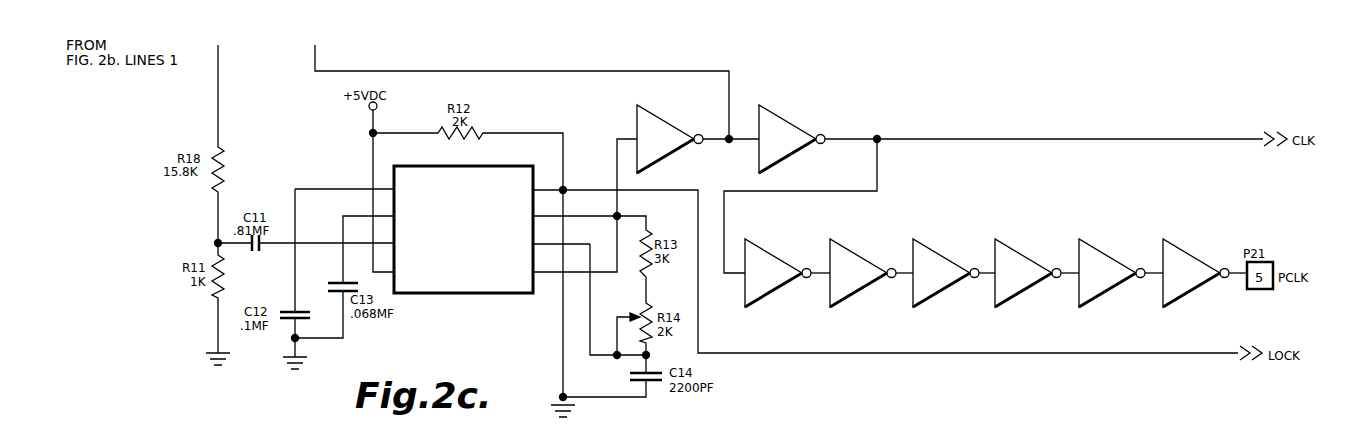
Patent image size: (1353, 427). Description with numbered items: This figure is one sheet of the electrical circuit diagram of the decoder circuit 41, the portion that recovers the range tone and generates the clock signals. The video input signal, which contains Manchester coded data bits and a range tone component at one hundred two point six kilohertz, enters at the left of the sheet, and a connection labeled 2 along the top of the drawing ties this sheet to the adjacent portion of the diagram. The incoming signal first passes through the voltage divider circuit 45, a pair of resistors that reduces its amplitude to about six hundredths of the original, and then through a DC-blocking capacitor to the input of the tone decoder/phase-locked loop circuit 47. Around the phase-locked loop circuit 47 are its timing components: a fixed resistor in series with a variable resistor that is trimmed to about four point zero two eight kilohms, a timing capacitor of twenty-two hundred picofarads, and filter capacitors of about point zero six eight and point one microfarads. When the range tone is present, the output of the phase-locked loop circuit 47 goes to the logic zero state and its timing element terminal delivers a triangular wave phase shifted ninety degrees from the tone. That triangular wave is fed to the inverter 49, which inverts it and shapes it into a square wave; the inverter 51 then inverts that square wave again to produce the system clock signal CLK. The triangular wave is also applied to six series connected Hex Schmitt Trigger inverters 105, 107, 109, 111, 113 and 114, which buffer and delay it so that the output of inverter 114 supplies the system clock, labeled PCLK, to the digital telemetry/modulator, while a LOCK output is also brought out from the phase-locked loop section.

The line 2 from FIG. 2b 2 is at (515, 94).
The decoder circuit 41 is at (1058, 109).
The voltage divider circuit 45 is at (305, 158).
The tone decoder/phase-locked loop circuit 47 is at (463, 294).
The inverter 49 is at (659, 122).
The inverter 51 is at (782, 122).
The Hex Schmitt Trigger inverter 105 is at (758, 243).
The Hex Schmitt Trigger inverter 107 is at (842, 249).
The Hex Schmitt Trigger inverter 109 is at (955, 208).
The Hex Schmitt Trigger inverter 111 is at (1002, 243).
The Hex Schmitt Trigger inverter 113 is at (1092, 243).
The Hex Schmitt Trigger inverter 114 is at (1172, 243).